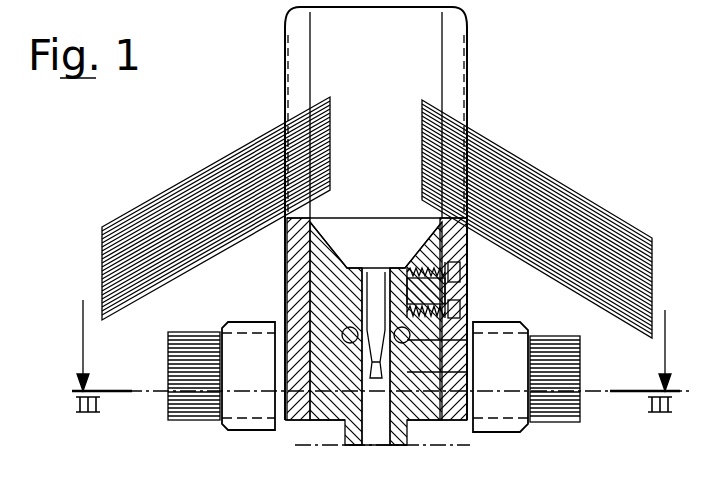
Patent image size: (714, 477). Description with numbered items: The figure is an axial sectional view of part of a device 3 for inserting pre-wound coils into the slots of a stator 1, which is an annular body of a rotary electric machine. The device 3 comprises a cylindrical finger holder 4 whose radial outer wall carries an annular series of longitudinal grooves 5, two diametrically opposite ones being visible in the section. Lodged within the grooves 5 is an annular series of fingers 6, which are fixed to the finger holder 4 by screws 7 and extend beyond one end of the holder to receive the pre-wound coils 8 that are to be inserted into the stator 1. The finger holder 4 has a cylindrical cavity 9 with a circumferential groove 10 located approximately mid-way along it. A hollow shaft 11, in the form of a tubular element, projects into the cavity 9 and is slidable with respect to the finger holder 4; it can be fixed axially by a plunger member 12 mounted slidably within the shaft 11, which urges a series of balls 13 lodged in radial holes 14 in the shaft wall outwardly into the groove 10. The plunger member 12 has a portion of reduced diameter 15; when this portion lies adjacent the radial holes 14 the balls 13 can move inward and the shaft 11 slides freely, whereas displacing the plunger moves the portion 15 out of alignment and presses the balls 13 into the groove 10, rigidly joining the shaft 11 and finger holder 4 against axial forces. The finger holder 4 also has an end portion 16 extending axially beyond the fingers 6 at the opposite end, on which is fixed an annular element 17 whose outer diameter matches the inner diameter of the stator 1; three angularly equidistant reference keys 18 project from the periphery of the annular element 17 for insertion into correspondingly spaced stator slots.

The stator 1 is at (538, 348).
The device for the insertion of pre-wound coils 3 is at (523, 118).
The cylindrical finger holder 4 is at (312, 245).
The longitudinal grooves 5 is at (307, 268).
The fingers 6 is at (300, 72).
The screws 7 is at (458, 284).
The pre-wound coils 8 is at (190, 190).
The cylindrical cavity 9 is at (500, 328).
The circumferential groove 10 is at (432, 372).
The hollow shaft 11 is at (368, 404).
The plunger member 12 is at (340, 422).
The balls 13 is at (343, 332).
The radial holes 14 is at (378, 320).
The portion of reduced diameter 15 is at (468, 390).
The end portion 16 is at (300, 365).
The annular element 17 is at (472, 430).
The reference keys 18 is at (276, 394).